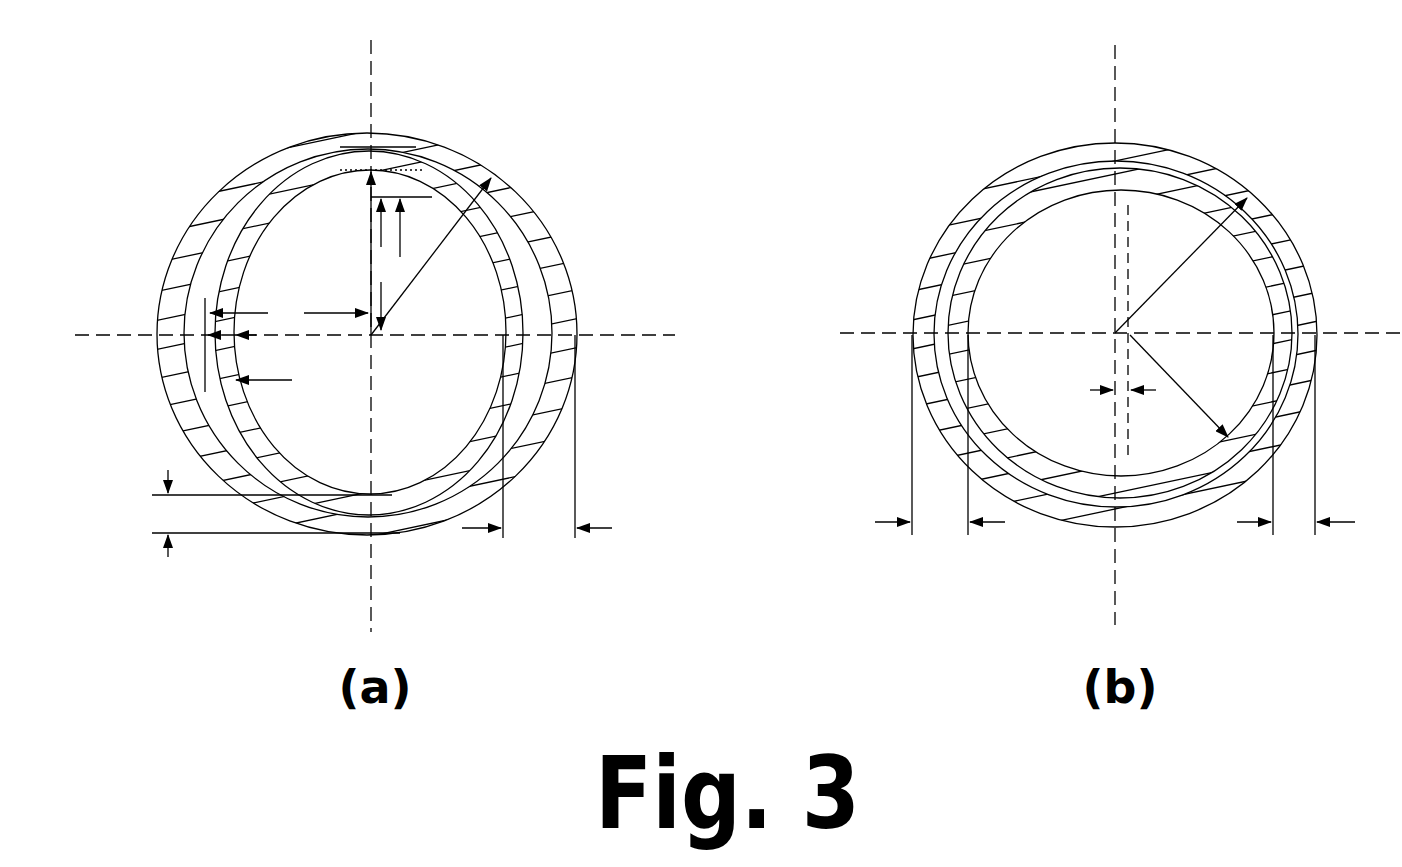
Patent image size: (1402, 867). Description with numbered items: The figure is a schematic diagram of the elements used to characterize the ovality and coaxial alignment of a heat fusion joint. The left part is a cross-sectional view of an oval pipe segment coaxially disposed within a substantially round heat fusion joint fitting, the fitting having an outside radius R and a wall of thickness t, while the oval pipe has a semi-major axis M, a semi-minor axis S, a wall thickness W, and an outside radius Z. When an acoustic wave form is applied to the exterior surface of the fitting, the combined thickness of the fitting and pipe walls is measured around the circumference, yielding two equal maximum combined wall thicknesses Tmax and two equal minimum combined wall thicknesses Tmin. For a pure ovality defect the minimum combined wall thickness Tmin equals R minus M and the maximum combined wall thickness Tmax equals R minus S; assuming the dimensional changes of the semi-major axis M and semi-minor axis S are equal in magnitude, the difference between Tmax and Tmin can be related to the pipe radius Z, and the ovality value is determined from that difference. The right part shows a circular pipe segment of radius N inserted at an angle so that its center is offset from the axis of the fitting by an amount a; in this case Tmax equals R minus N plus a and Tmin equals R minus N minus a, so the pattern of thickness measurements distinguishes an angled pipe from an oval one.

The thickness t is at (217, 273).
The thickness of the wall of the oval pipe W is at (533, 252).
The outside radius of the pipe Z is at (320, 253).
The semi-minor axis of the oval pipe S is at (296, 338).
The semi-major axis of the oval pipe M is at (371, 238).
The outside radius of the heat fusion joint fitting R is at (478, 210).
The maximum combined wall thickness Tmax is at (537, 436).
The minimum combined wall thickness Tmin is at (276, 513).
The offset of the pipe center from the fitting axis a is at (1110, 383).
The radius of the pipe segment N is at (1188, 394).